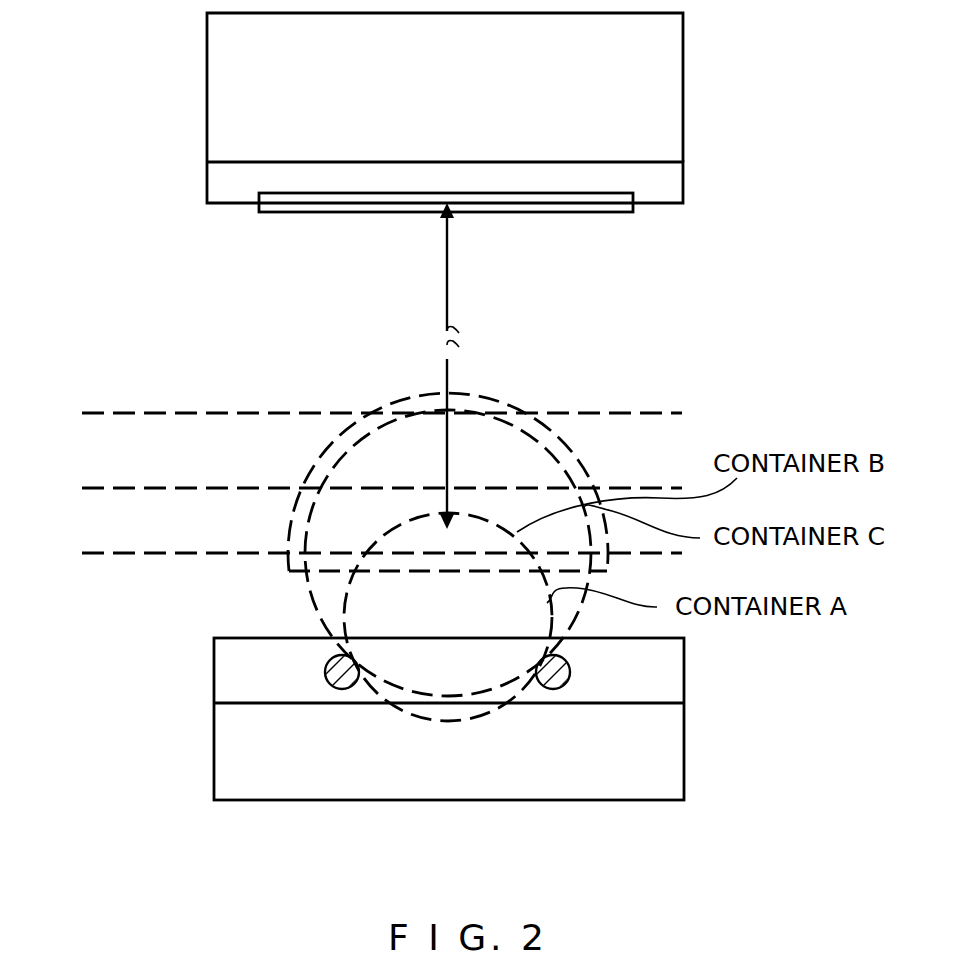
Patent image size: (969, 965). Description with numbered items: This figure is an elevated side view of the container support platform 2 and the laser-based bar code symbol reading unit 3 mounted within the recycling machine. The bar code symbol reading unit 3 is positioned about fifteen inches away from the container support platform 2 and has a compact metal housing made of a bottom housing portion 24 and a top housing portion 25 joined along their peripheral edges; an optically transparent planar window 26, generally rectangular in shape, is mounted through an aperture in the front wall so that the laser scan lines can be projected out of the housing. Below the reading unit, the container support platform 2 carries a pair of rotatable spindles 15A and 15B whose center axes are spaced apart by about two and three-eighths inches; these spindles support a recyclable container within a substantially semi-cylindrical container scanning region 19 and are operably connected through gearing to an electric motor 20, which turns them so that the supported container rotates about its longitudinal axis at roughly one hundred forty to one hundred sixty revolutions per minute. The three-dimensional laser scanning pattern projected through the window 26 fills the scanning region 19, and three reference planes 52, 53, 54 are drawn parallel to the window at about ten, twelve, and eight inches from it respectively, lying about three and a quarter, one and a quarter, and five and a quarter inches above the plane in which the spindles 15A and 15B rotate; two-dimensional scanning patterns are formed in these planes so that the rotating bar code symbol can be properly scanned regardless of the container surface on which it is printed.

The container support platform 2 is at (708, 739).
The bar code symbol reading unit 3 is at (692, 163).
The rotatable spindle 15A is at (325, 672).
The rotatable spindle 15B is at (571, 670).
The semi-cylindrical container scanning region 19 is at (496, 399).
The electric motor 20 is at (214, 757).
The bottom housing portion 24 is at (209, 127).
The top housing portion 25 is at (209, 188).
The optically transparent planar window 26 is at (268, 213).
The reference plane 52 is at (93, 487).
The reference plane 53 is at (95, 558).
The reference plane 54 is at (92, 412).